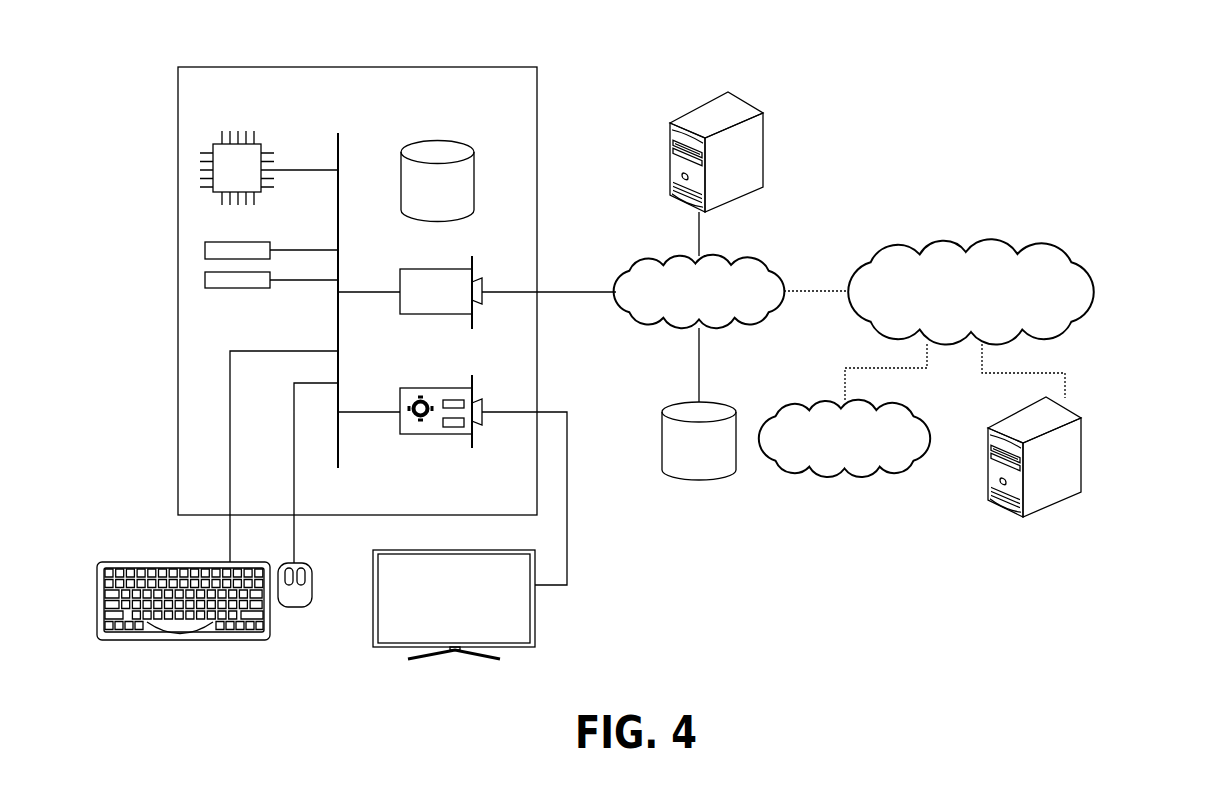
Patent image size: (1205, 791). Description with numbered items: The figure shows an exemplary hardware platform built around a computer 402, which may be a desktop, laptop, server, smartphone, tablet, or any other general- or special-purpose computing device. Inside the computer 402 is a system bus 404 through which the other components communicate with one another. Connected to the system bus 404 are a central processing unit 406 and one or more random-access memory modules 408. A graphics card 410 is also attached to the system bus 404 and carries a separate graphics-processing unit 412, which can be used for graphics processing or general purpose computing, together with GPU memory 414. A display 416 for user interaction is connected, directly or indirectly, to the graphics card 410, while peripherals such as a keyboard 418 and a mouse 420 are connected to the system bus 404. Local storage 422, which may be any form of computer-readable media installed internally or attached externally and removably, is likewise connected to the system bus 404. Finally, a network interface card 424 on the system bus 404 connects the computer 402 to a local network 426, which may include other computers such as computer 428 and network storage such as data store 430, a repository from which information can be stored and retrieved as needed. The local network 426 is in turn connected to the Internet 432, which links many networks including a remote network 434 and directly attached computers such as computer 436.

The computer 402 is at (490, 67).
The system bus 404 is at (339, 135).
The central processing unit 406 is at (257, 144).
The random-access memory modules 408 is at (270, 248).
The graphics card 410 is at (467, 469).
The graphics-processing unit 412 is at (420, 418).
The GPU memory 414 is at (451, 428).
The display 416 is at (536, 630).
The keyboard 418 is at (183, 641).
The mouse 420 is at (297, 607).
The local storage 422 is at (475, 178).
The network interface card 424 is at (400, 272).
The local network 426 is at (740, 257).
The computer 428 is at (745, 100).
The data store 430 is at (733, 406).
The Internet 432 is at (1022, 252).
The remote network 434 is at (885, 406).
The computer 436 is at (1082, 455).